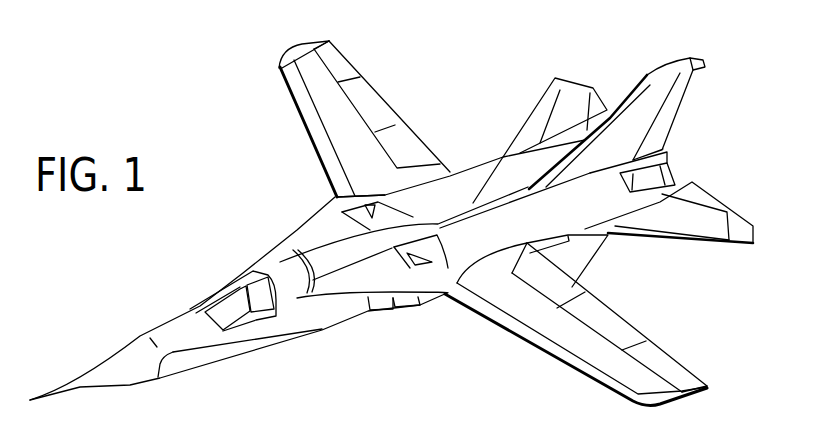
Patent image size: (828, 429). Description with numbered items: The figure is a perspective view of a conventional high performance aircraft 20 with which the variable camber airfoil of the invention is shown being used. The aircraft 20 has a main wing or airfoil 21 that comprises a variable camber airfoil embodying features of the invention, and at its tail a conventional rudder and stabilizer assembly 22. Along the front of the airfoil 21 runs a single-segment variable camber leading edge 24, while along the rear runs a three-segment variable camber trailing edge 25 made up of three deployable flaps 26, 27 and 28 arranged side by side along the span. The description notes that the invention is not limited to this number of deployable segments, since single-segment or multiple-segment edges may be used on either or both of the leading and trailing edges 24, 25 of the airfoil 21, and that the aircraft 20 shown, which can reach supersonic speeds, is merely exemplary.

The high performance aircraft 20 is at (344, 344).
The main wing 21 is at (322, 107).
The rudder and stabilizer assembly 22 is at (612, 78).
The variable camber leading edge 24 is at (313, 143).
The variable camber trailing edge 25 is at (372, 87).
The deployable flap 26 is at (407, 148).
The deployable flap 27 is at (380, 115).
The deployable flap 28 is at (343, 65).